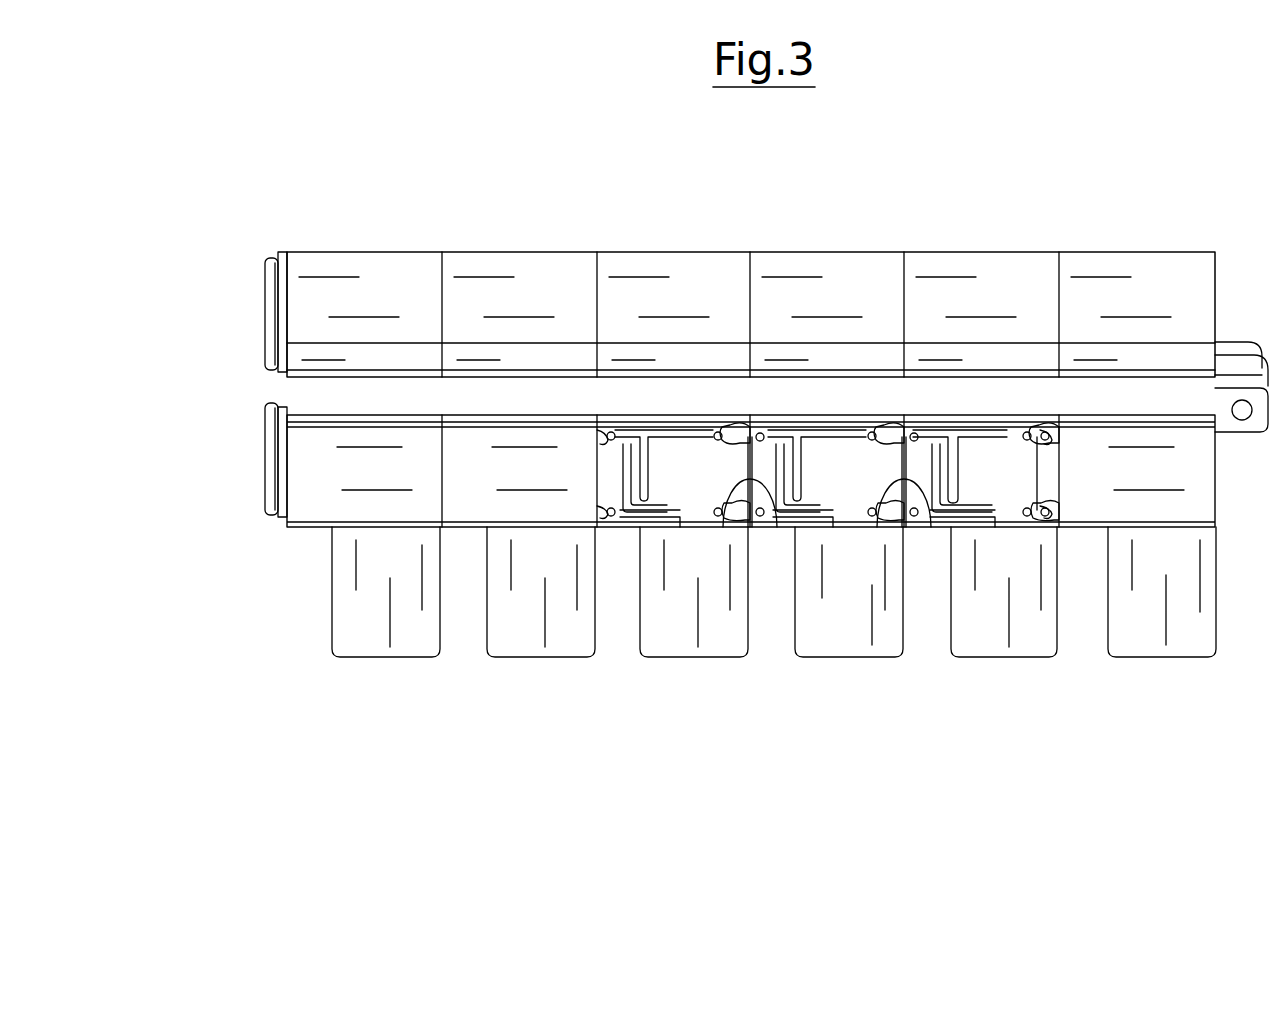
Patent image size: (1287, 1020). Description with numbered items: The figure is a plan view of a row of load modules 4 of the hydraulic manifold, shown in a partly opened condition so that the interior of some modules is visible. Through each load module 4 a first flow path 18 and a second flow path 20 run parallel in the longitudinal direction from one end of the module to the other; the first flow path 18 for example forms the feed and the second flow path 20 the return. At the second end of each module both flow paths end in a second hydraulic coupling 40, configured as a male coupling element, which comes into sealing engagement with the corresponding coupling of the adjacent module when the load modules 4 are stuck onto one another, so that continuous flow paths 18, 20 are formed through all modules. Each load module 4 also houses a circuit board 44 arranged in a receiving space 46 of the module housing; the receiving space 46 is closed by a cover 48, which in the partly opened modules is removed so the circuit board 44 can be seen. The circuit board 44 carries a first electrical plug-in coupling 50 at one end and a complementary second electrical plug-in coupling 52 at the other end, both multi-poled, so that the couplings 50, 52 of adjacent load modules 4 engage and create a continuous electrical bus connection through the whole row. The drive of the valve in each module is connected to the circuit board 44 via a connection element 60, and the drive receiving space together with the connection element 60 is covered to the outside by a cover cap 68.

The load module 4 is at (1157, 243).
The first flow path 18 is at (265, 294).
The second flow path 20 is at (265, 450).
The second hydraulic coupling 40 is at (278, 256).
The circuit board 44 is at (645, 517).
The receiving space 46 is at (718, 428).
The cover 48 is at (313, 512).
The first electrical plug-in coupling 50 is at (748, 497).
The second electrical plug-in coupling 52 is at (770, 530).
The connection element 60 is at (690, 520).
The cover cap 68 is at (390, 660).